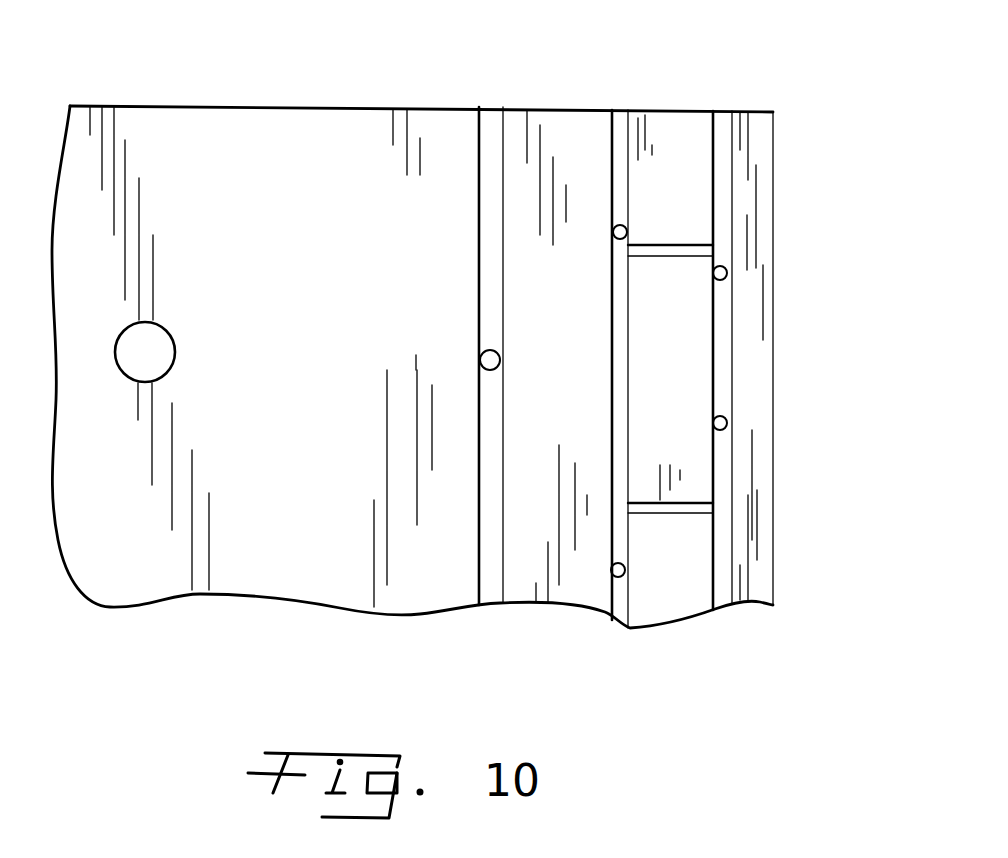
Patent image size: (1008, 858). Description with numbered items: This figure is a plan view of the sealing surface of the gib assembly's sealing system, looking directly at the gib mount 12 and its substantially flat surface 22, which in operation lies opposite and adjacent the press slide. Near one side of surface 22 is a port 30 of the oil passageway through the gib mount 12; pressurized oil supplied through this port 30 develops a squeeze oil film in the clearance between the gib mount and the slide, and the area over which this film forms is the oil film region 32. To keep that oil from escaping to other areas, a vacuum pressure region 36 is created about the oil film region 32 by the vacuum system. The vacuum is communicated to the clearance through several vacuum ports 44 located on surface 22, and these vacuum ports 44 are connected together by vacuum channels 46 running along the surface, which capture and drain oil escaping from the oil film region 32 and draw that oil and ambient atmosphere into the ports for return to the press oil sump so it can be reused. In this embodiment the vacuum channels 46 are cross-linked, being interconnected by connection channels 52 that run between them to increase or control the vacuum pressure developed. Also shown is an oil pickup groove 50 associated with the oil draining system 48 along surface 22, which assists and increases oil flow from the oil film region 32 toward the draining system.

The gib mount 12 is at (810, 106).
The surface 22 is at (208, 180).
The port 30 is at (170, 348).
The oil film region 32 is at (350, 452).
The vacuum pressure region 36 is at (668, 138).
The vacuum ports 44 is at (628, 232).
The vacuum channels 46 is at (618, 156).
The oil draining system 48 is at (497, 353).
The oil pickup groove 50 is at (480, 272).
The connection channels 52 is at (686, 245).